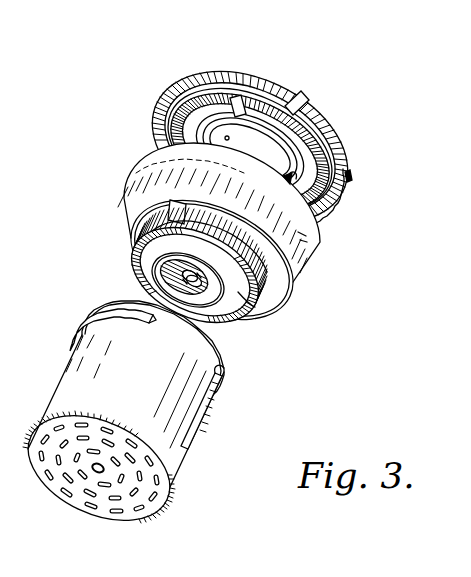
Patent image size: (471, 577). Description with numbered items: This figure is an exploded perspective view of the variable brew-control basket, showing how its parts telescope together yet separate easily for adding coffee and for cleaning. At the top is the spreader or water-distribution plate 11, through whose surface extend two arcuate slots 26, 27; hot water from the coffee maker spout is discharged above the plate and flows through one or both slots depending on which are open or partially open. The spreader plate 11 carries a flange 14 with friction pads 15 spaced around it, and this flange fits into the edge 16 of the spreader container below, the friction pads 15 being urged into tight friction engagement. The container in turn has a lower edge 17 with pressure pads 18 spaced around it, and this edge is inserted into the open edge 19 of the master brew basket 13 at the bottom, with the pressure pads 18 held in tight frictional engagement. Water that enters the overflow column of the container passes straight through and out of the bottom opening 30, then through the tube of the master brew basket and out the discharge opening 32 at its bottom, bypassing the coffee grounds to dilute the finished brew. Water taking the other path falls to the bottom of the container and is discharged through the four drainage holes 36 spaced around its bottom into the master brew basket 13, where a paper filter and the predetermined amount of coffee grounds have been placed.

The spreader plate 11 is at (330, 127).
The master brew basket 13 is at (200, 440).
The flange 14 is at (327, 203).
The friction pads 15 is at (245, 103).
The edge of spreader container 16 is at (318, 237).
The lower edge 17 is at (240, 295).
The pressure pads 18 is at (177, 197).
The open edge 19 is at (222, 377).
The arcuate slot 26 is at (225, 137).
The arcuate slot 27 is at (302, 194).
The bottom opening 30 is at (160, 278).
The discharge opening 32 is at (97, 471).
The drainage holes 36 is at (140, 249).